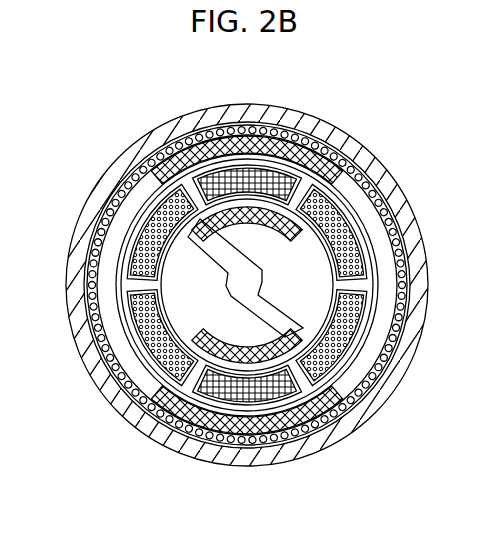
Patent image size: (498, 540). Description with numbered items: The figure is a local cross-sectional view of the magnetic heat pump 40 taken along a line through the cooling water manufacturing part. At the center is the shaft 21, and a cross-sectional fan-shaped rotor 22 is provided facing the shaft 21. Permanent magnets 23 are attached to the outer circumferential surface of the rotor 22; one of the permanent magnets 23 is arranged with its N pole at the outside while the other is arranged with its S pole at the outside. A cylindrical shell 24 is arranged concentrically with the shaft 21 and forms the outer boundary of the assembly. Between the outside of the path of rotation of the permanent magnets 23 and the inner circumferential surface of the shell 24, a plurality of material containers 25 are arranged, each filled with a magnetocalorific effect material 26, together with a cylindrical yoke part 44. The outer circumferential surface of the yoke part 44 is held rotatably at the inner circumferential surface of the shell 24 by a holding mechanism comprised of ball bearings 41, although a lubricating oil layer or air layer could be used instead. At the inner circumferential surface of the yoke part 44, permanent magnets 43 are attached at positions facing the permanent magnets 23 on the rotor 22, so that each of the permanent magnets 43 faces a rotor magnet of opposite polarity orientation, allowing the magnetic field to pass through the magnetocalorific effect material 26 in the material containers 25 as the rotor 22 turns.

The shaft 21 is at (228, 276).
The rotor 22 is at (346, 306).
The permanent magnets 23 is at (282, 422).
The cylindrical shell 24 is at (392, 164).
The material containers 25 is at (376, 243).
The magnetocalorific effect material 26 is at (376, 288).
The magnetic heat pump 40 is at (150, 102).
The ball bearings 41 is at (385, 374).
The permanent magnets 43 is at (246, 434).
The yoke part 44 is at (112, 344).